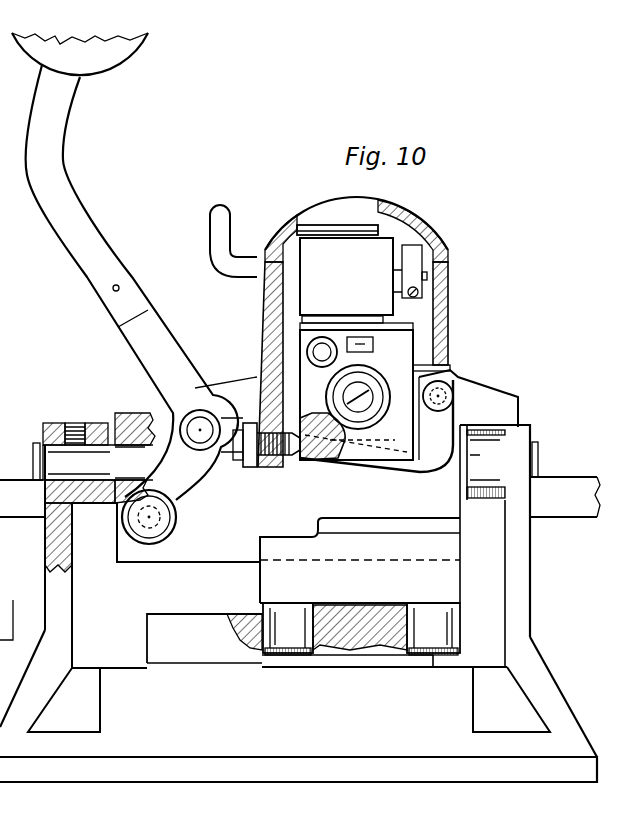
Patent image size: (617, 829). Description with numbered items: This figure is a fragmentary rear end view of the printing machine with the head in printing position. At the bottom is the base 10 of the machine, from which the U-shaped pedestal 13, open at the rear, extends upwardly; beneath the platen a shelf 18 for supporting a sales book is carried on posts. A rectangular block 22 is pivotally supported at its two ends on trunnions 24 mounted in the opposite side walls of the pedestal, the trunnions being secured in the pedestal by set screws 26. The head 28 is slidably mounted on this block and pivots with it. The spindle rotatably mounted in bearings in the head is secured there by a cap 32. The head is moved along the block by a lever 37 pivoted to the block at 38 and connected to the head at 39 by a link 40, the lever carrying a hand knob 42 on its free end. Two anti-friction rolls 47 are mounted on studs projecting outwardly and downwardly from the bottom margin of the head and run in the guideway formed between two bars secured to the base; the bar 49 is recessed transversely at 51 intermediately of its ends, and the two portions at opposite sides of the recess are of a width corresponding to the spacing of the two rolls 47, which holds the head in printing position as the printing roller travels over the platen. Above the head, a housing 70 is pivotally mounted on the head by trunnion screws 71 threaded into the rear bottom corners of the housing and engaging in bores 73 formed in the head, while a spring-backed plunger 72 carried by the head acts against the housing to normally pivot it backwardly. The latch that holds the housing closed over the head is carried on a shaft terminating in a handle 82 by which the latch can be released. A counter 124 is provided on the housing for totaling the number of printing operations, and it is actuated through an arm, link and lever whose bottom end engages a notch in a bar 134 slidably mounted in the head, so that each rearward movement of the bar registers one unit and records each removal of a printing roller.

The base 10 is at (567, 712).
The pedestal 13 is at (523, 588).
The shelf 18 is at (28, 512).
The rectangular block 22 is at (185, 553).
The trunnions 24 is at (33, 454).
The set screws 26 is at (77, 427).
The head 28 is at (407, 343).
The cap 32 is at (368, 383).
The lever 37 is at (68, 190).
The lever pivot 38 is at (160, 522).
The link connection 39 is at (445, 383).
The link 40 is at (430, 468).
The hand knob 42 is at (118, 48).
The anti-friction rolls 47 is at (292, 612).
The bar 49 is at (203, 622).
The recess 51 is at (266, 655).
The housing 70 is at (443, 240).
The trunnion screws 71 is at (285, 465).
The plunger 72 is at (318, 352).
The bores 73 is at (308, 462).
The handle 82 is at (212, 218).
The counter 124 is at (363, 284).
The bar 134 is at (358, 343).